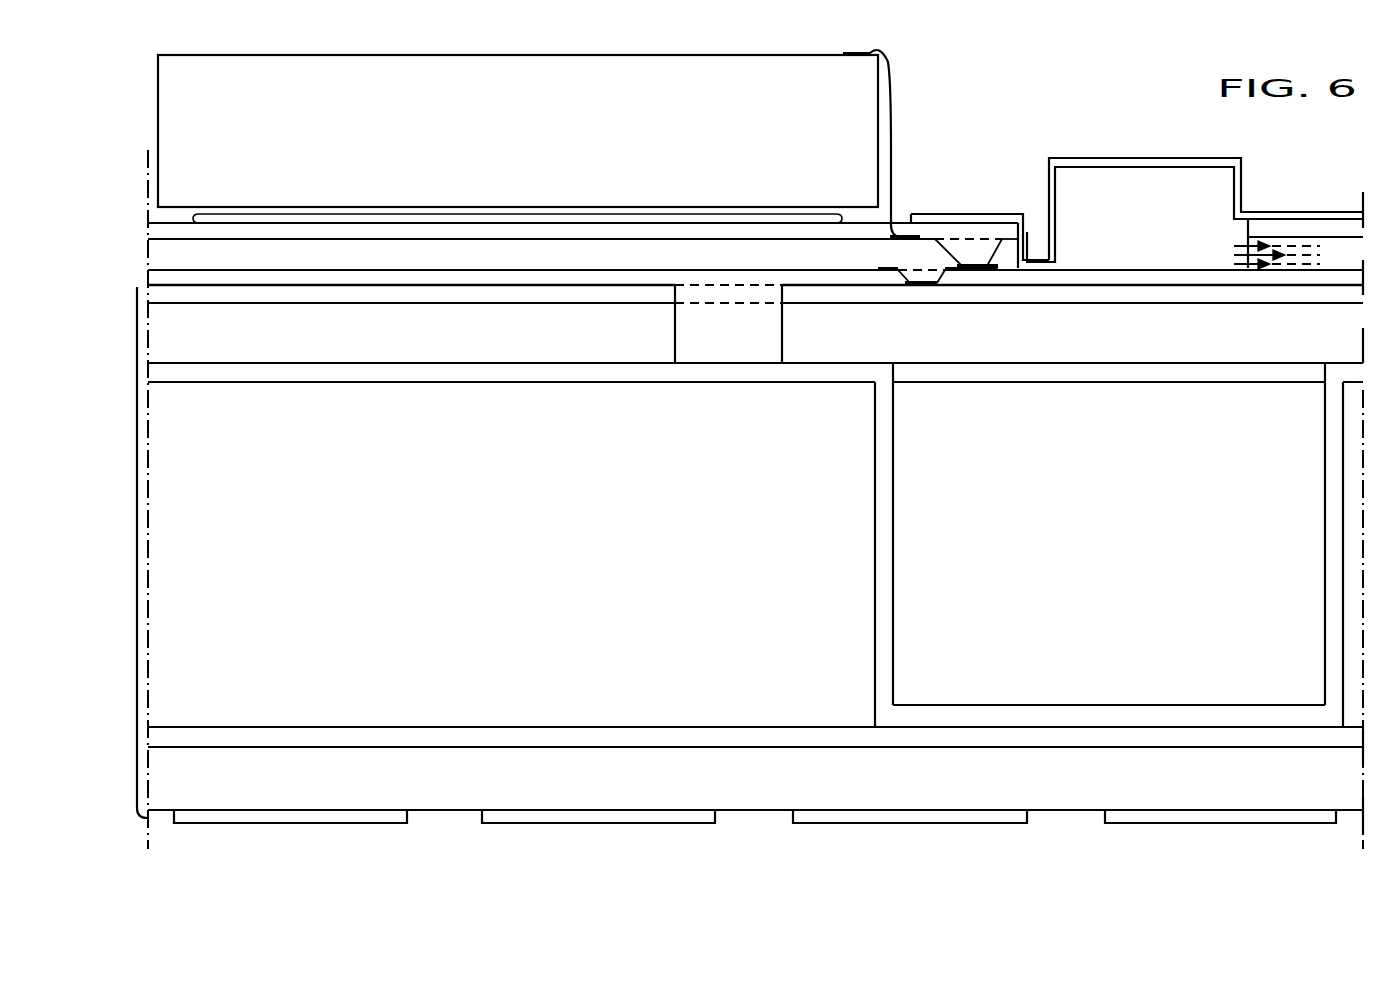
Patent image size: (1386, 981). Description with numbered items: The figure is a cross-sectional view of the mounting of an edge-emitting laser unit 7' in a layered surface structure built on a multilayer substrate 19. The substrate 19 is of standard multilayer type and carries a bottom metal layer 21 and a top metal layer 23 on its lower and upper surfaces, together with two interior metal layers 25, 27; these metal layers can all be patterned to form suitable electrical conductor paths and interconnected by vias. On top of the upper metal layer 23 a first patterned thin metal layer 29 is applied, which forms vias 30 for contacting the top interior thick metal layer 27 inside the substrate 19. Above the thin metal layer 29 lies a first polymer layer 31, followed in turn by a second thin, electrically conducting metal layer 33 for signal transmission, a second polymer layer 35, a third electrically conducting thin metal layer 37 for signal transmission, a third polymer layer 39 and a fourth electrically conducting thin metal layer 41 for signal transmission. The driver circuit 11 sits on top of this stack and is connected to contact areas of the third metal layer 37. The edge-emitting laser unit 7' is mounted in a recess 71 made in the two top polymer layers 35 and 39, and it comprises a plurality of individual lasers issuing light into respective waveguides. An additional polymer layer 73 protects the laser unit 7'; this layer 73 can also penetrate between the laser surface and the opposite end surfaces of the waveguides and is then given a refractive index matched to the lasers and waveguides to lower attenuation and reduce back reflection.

The driver circuit 11 is at (162, 136).
The fourth electrically conducting thin metal layer 41 is at (148, 218).
The third polymer layer 39 is at (140, 223).
The third electrically conducting thin metal layer 37 is at (148, 239).
The second polymer layer 35 is at (148, 250).
The second electrically conducting thin metal layer 33 is at (148, 270).
The first polymer layer 31 is at (153, 282).
The first patterned thin metal layer 29 is at (148, 286).
The top metal layer of substrate 23 is at (150, 302).
The via 30 is at (776, 320).
The top interior thick metal layer 27 is at (150, 372).
The substrate 19 is at (137, 550).
The lower interior metal layer 25 is at (150, 735).
The bottom metal layer of substrate 21 is at (158, 826).
The additional polymer layer 73 is at (962, 214).
The recess 71 is at (1028, 230).
The edge-emitting laser unit 7' is at (1206, 190).